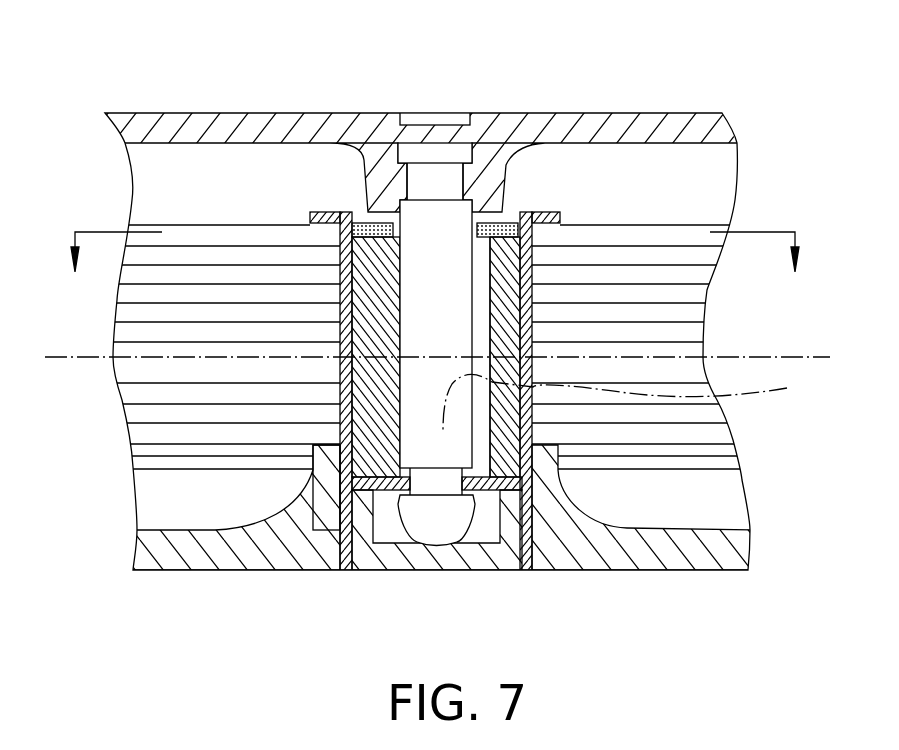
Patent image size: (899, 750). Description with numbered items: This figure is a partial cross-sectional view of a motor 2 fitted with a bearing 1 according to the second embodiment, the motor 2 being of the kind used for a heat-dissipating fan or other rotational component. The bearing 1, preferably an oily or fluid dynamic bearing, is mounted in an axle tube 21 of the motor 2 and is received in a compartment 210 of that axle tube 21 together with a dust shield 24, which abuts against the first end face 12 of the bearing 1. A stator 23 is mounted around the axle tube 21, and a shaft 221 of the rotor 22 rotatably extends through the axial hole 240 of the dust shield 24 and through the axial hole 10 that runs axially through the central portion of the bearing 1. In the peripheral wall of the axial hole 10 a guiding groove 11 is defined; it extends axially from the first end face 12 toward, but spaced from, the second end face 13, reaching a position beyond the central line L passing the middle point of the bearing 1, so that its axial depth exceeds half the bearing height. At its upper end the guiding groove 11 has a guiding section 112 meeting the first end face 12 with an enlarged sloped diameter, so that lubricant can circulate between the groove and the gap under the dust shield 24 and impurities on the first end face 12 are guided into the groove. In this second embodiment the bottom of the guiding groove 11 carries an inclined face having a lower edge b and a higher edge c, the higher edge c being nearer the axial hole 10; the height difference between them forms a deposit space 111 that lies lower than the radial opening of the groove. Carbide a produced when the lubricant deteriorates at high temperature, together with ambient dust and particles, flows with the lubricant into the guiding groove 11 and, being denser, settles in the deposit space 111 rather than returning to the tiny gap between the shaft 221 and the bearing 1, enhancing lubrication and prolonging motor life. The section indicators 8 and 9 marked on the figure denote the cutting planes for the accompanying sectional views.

The bearing 1 is at (533, 253).
The motor 2 is at (462, 92).
The section line 8- 8 is at (433, 253).
The section line 9- 9 is at (631, 392).
The axial hole 10 is at (392, 212).
The guiding groove 11 is at (483, 322).
The first end face 12 is at (356, 192).
The second end face 13 is at (472, 403).
The axle tube 21 is at (590, 568).
The rotor 22 is at (170, 123).
The stator 23 is at (170, 417).
The dust shield 24 is at (366, 207).
The deposit space 111 is at (340, 447).
The guiding section 112 is at (511, 215).
The compartment 210 is at (536, 212).
The shaft 221 is at (432, 225).
The axial hole of the dust shield 240 is at (478, 223).
The carbide a is at (478, 410).
The lower edge b is at (516, 400).
The higher edge c is at (477, 408).
The central line L is at (439, 341).